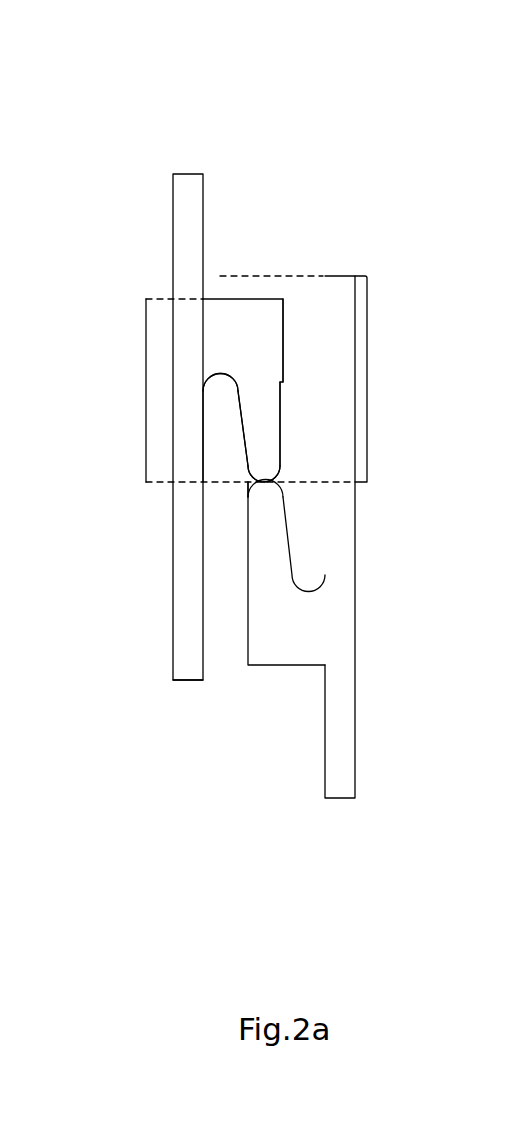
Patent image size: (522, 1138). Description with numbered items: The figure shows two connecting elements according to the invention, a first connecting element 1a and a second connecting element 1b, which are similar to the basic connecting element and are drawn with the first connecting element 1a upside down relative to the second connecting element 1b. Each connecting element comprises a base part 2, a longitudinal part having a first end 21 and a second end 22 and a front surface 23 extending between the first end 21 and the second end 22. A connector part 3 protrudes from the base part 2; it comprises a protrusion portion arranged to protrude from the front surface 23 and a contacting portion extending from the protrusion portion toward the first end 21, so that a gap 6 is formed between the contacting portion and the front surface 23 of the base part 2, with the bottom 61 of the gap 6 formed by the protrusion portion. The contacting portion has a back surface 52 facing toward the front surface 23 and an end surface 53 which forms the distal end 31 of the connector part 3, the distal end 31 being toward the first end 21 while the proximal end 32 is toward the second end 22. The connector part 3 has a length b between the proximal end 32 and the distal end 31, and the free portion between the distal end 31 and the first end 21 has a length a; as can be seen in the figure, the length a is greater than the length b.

The first connecting element 1a is at (155, 148).
The second connecting element 1b is at (348, 250).
The base part 2 is at (190, 262).
The first end 21 is at (190, 680).
The second end 22 is at (190, 173).
The front surface 23 is at (327, 367).
The connector part 3 is at (260, 453).
The distal end 31 is at (290, 476).
The proximal end 32 is at (245, 298).
The back surface 52 is at (242, 420).
The end surface 53 is at (265, 482).
The gap 6 is at (220, 437).
The bottom of the gap 61 is at (221, 392).
The length of the free portion a is at (367, 378).
The length of the connector part b is at (146, 390).